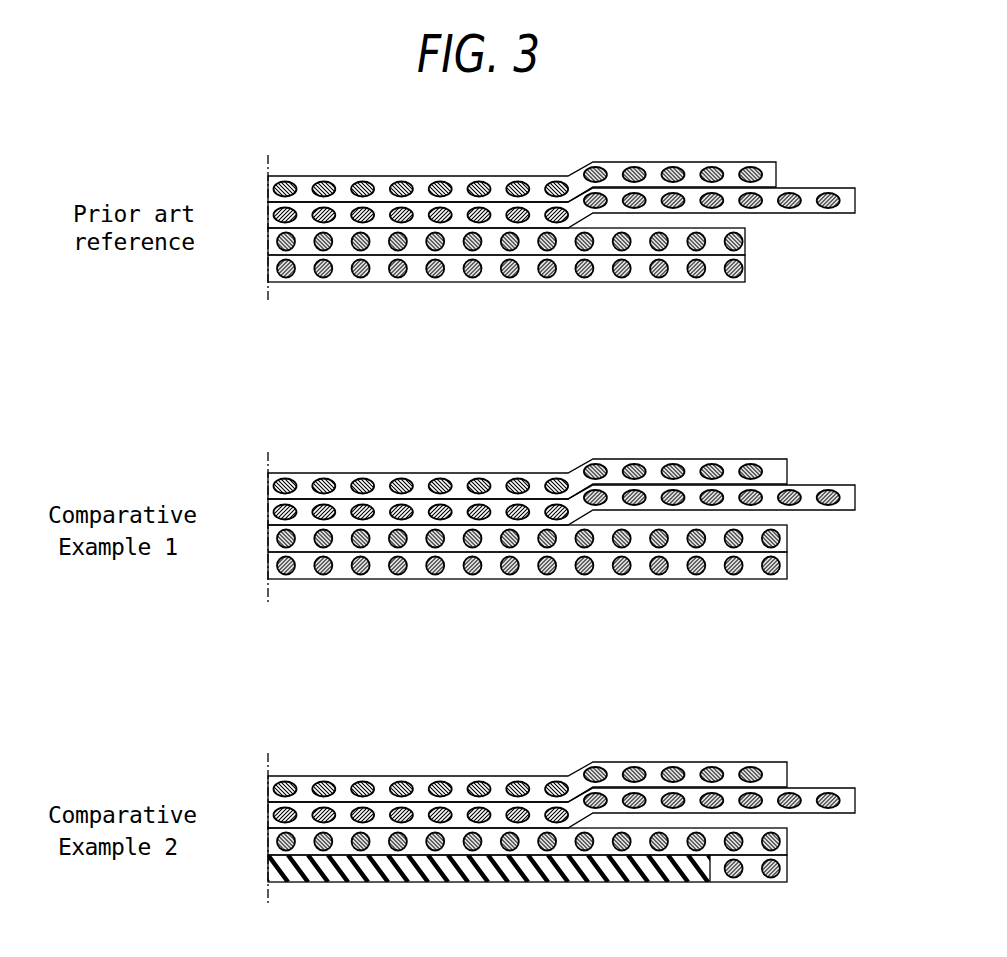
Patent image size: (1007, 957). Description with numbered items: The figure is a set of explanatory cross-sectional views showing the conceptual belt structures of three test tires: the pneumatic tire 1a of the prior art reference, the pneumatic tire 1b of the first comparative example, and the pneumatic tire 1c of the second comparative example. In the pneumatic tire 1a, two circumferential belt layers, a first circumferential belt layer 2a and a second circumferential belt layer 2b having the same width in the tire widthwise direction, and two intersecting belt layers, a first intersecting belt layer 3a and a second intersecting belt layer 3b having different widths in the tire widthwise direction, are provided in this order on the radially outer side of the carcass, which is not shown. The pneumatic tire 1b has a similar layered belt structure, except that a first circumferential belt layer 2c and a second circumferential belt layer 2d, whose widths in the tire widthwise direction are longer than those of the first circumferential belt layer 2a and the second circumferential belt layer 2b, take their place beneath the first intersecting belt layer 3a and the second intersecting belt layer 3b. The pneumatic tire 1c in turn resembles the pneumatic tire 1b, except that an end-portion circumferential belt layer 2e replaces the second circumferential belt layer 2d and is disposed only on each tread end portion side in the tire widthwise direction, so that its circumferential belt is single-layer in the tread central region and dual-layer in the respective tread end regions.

The pneumatic tire 1a is at (560, 151).
The pneumatic tire 1b is at (561, 488).
The pneumatic tire 1c is at (551, 790).
The second intersecting belt layer 3b is at (268, 183).
The first intersecting belt layer 3a is at (268, 210).
The first circumferential belt layer 2a is at (268, 238).
The second circumferential belt layer 2b is at (268, 266).
The first circumferential belt layer 2c is at (268, 536).
The second circumferential belt layer 2d is at (268, 564).
The end-portion circumferential belt layer 2e is at (750, 875).